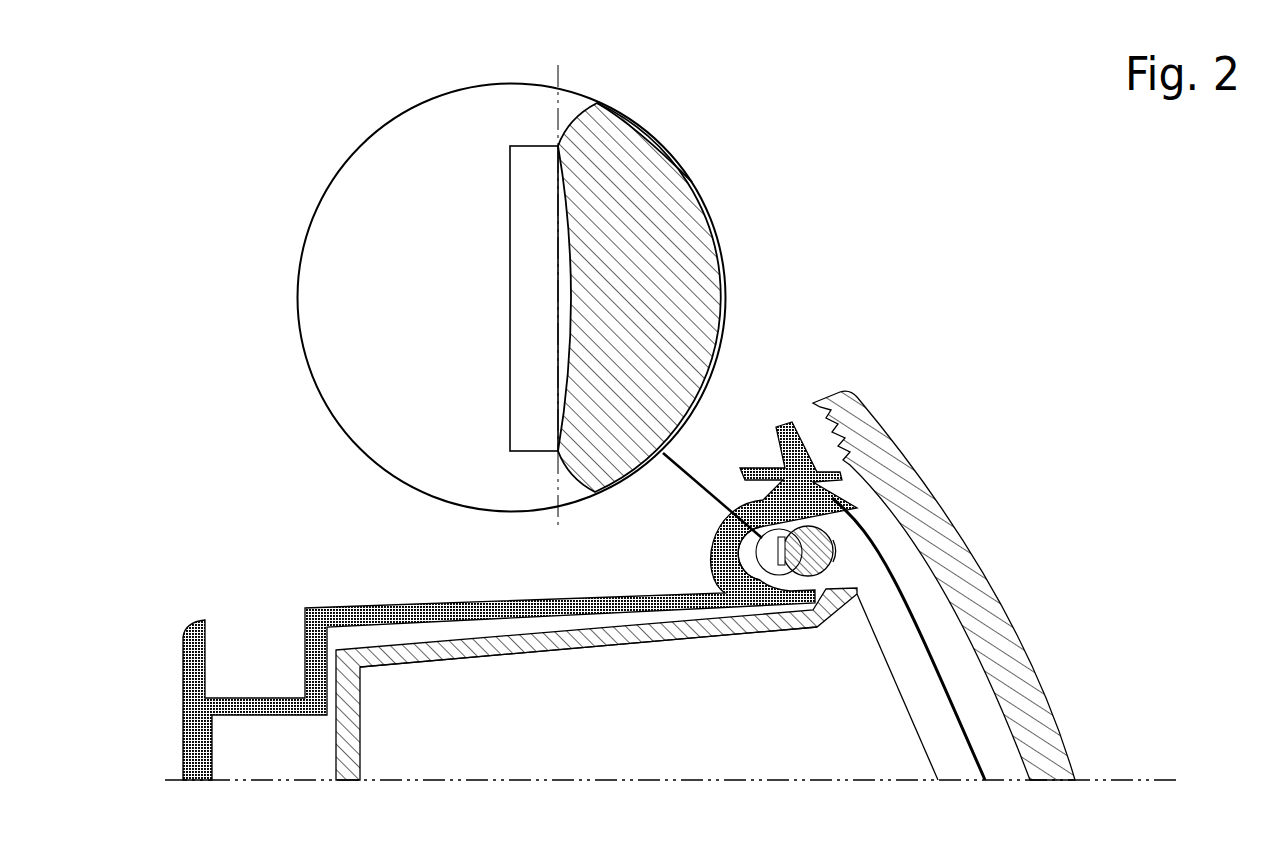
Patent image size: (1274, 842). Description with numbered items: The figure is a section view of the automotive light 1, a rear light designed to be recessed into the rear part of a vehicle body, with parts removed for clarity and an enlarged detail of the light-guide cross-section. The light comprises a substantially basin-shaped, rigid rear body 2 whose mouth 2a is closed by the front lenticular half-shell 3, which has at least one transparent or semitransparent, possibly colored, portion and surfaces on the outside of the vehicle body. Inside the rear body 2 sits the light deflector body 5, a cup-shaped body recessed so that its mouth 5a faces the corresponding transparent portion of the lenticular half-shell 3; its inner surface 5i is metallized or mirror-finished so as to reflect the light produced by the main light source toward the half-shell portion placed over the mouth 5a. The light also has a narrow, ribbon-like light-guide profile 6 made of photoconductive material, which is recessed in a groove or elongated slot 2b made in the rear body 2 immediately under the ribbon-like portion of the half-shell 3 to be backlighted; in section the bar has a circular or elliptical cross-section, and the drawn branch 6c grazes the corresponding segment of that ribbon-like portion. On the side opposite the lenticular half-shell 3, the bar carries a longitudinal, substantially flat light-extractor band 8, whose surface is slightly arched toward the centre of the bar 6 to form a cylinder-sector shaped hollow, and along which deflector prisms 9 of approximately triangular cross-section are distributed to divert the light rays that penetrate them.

The automotive light 1 is at (1095, 412).
The rear body 2 is at (800, 437).
The mouth of the rear body 2a is at (912, 605).
The groove or elongated slot 2b is at (752, 571).
The front lenticular half-shell 3 is at (880, 448).
The light deflector body 5 is at (415, 648).
The mouth of the cup-shaped body 5a is at (918, 723).
The inner surface of the cup-shaped body 5i is at (581, 650).
The light-guide profile 6 is at (647, 152).
The branch of the light-guide bar 6c is at (835, 548).
The light-extractor band 8 is at (571, 279).
The deflector prisms 9 is at (538, 172).